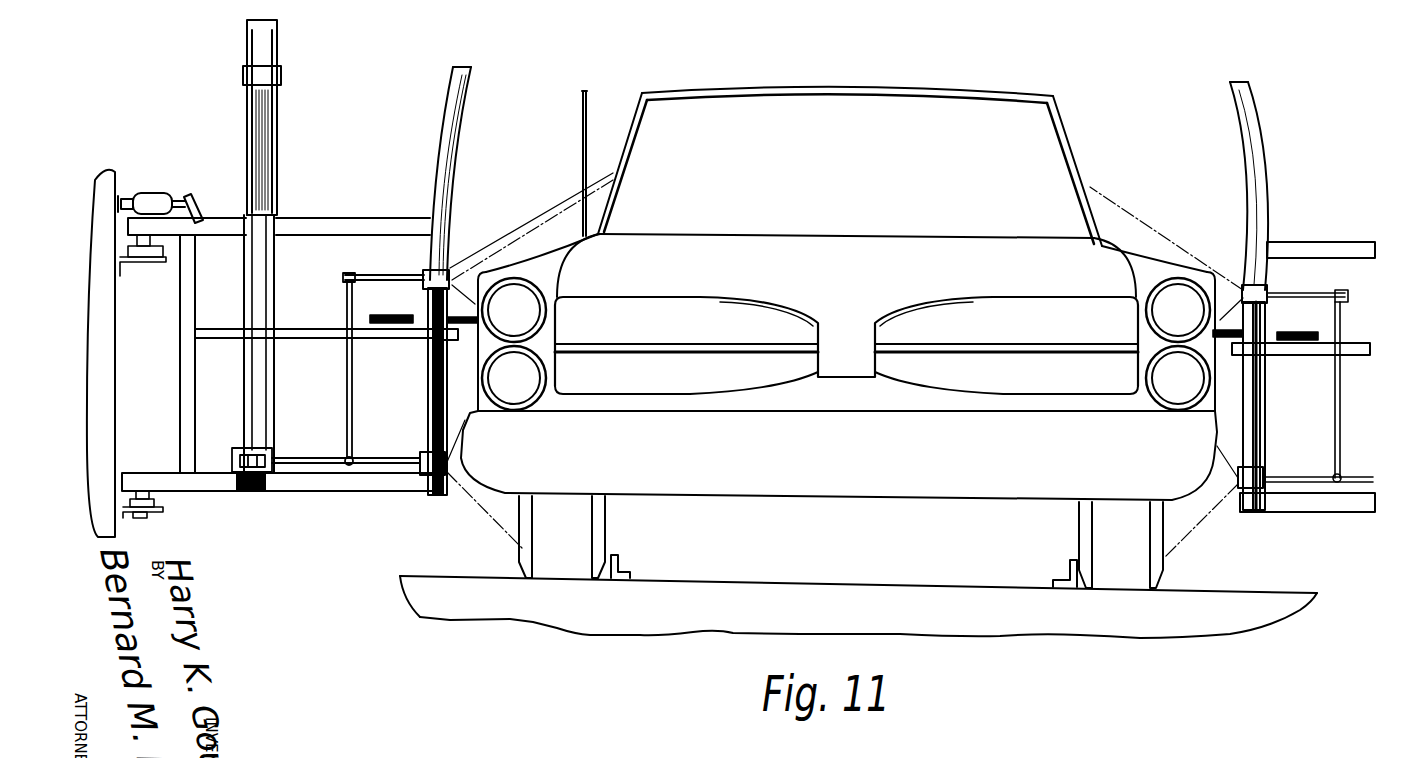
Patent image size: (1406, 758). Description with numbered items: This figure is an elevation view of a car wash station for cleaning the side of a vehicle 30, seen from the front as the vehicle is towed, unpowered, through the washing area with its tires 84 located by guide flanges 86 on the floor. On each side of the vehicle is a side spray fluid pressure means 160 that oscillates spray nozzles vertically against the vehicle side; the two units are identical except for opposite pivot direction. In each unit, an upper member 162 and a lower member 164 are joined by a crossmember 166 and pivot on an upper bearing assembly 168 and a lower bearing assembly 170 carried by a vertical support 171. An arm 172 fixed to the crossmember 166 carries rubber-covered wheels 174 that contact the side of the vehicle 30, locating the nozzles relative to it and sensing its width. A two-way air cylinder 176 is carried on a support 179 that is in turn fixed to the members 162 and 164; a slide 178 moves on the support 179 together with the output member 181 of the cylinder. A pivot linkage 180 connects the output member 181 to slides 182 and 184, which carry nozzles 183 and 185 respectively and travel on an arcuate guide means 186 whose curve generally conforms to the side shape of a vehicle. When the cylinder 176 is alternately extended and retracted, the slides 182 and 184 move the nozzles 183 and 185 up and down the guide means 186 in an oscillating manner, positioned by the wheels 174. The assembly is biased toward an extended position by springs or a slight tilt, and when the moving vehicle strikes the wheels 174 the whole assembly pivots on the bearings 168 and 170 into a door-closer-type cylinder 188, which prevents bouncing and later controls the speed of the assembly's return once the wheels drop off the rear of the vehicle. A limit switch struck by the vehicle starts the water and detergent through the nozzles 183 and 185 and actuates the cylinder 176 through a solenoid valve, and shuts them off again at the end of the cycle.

The vehicle 30 is at (990, 88).
The tires 84 is at (603, 525).
The flanges 86 is at (616, 555).
The side spray fluid pressure means 160 is at (148, 132).
The member 162 is at (206, 220).
The member 164 is at (305, 478).
The crossmember 166 is at (188, 394).
The bearing assembly 168 is at (135, 262).
The bearing assembly 170 is at (160, 517).
The vertical support 171 is at (108, 362).
The arm 172 is at (325, 336).
The wheels 174 is at (398, 318).
The air cylinder 176 is at (253, 112).
The slide 178 is at (235, 460).
The support 179 is at (243, 312).
The pivot linkage 180 is at (349, 308).
The output member 181 is at (258, 328).
The slide 182 is at (425, 278).
The nozzle 183 is at (452, 276).
The slide 184 is at (422, 460).
The nozzle 185 is at (447, 478).
The guide means 186 is at (447, 114).
The door-closer-type cylinder 188 is at (150, 198).